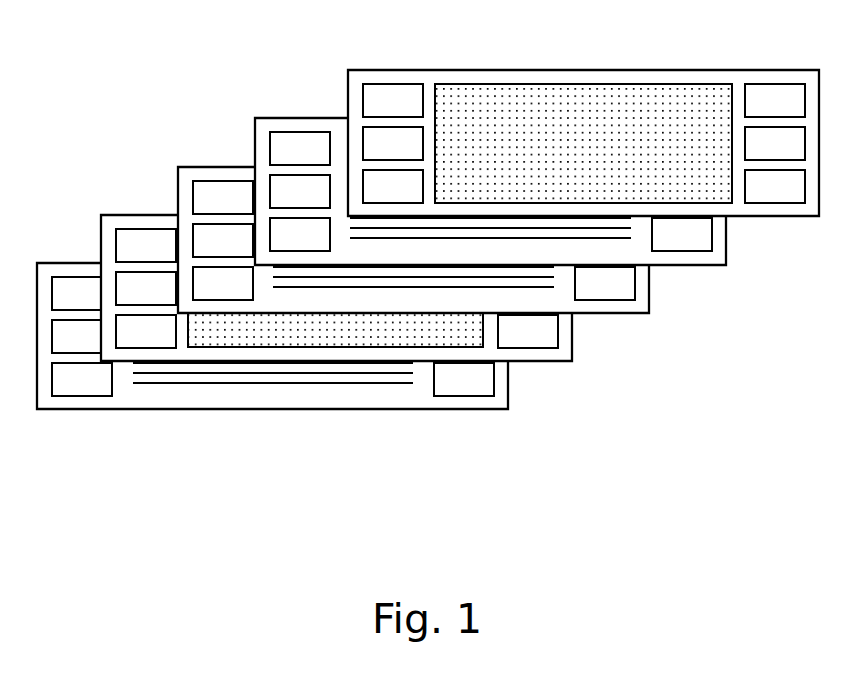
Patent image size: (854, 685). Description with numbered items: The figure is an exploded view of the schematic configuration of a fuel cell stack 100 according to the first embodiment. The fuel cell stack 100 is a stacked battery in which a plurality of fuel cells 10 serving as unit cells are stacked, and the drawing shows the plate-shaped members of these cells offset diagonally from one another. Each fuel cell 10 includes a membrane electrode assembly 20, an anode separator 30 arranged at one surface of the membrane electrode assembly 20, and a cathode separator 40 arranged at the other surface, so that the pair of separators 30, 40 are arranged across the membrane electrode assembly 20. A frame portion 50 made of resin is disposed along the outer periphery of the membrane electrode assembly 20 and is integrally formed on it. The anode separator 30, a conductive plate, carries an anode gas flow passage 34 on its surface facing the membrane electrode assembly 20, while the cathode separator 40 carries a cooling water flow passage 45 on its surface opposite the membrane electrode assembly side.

The fuel cell stack 100 is at (195, 100).
The fuel cell 10 is at (152, 139).
The membrane electrode assembly 20 is at (232, 327).
The anode separator 30 is at (67, 268).
The cathode separator 40 is at (183, 190).
The frame portion 50 is at (183, 350).
The anode gas flow passage 34 is at (252, 380).
The cooling water flow passage 45 is at (368, 282).